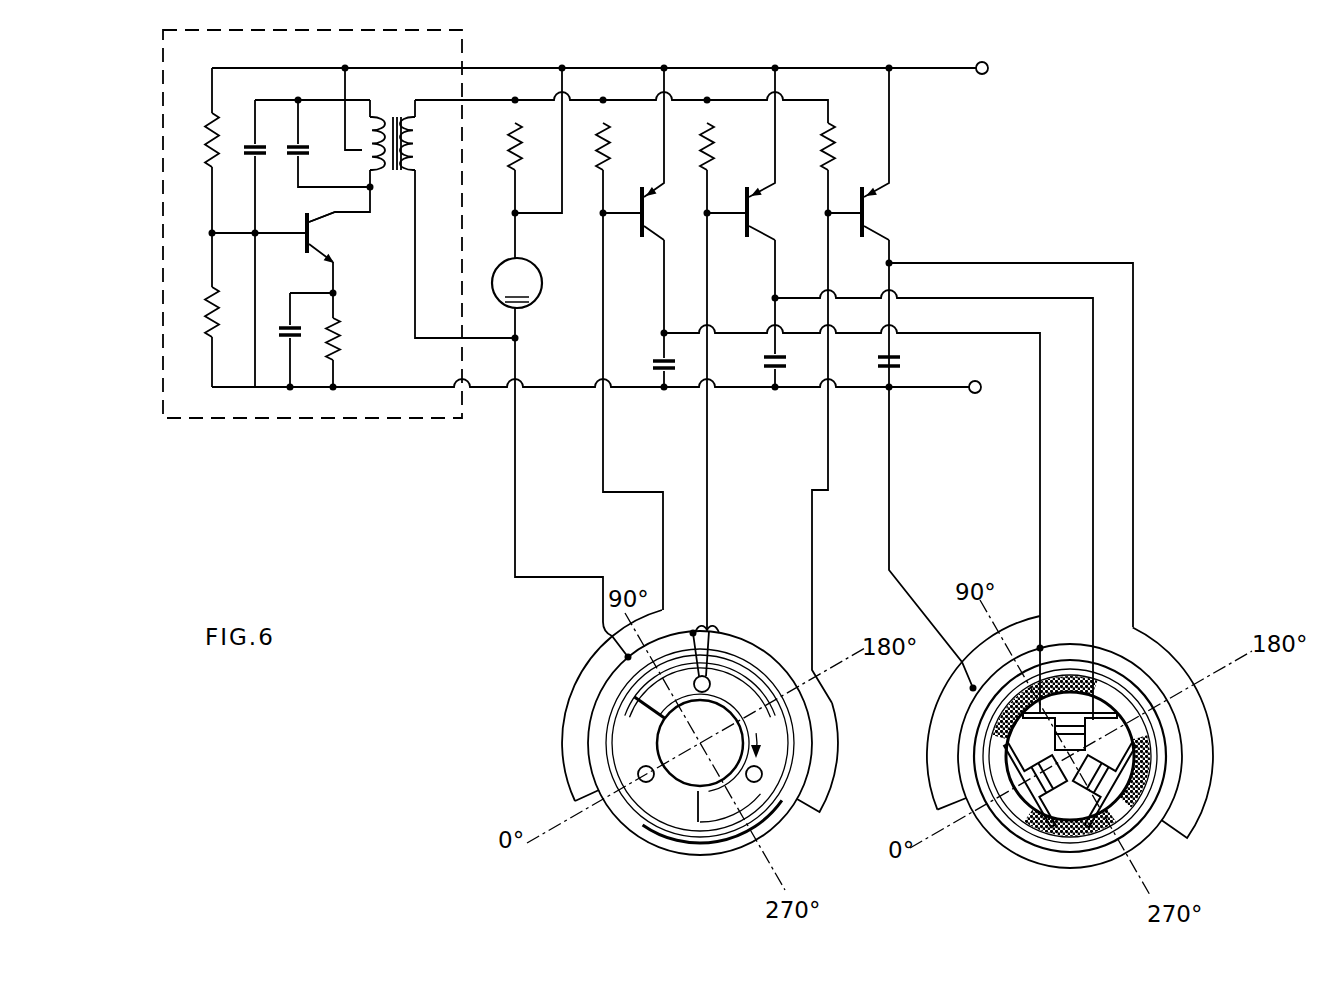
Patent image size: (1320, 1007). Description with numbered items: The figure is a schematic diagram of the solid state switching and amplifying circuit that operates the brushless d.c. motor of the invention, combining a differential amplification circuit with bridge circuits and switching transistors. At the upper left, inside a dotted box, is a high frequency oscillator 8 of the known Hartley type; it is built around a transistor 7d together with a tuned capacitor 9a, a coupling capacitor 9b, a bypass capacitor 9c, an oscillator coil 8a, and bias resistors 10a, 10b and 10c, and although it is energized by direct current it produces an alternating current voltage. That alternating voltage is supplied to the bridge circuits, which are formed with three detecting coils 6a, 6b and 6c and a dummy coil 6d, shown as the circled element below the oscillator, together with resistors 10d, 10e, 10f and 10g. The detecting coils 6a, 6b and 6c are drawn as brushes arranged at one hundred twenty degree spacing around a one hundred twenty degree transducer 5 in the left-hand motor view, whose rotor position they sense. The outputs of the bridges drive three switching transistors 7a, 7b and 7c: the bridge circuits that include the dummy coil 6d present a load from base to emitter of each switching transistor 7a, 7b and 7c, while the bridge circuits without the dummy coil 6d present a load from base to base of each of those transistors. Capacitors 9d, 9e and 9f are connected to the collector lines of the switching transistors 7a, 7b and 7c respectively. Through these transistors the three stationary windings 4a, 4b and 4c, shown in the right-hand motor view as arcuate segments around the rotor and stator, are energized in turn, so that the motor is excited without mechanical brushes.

The stationary winding 4a is at (1018, 815).
The stationary winding 4b is at (1067, 708).
The stationary winding 4c is at (1140, 782).
The 120° transducer 5 is at (697, 808).
The detecting coil 6a is at (645, 783).
The detecting coil 6b is at (712, 678).
The detecting coil 6c is at (756, 783).
The dummy coil 6d is at (517, 283).
The switching transistor 7a is at (646, 209).
The switching transistor 7b is at (752, 209).
The switching transistor 7c is at (870, 210).
The transistor 7d is at (322, 220).
The high frequency oscillator 8 is at (178, 418).
The oscillator coil 8a is at (396, 116).
The tuned capacitor 9a is at (266, 151).
The coupling capacitor 9b is at (309, 151).
The bypass capacitor 9c is at (283, 333).
The capacitor 9d is at (660, 361).
The capacitor 9e is at (766, 357).
The capacitor 9f is at (880, 357).
The bias resistor 10a is at (210, 133).
The bias resistor 10b is at (220, 313).
The bias resistor 10c is at (341, 336).
The resistor 10d is at (611, 152).
The resistor 10e is at (715, 152).
The resistor 10f is at (835, 152).
The resistor 10g is at (511, 152).